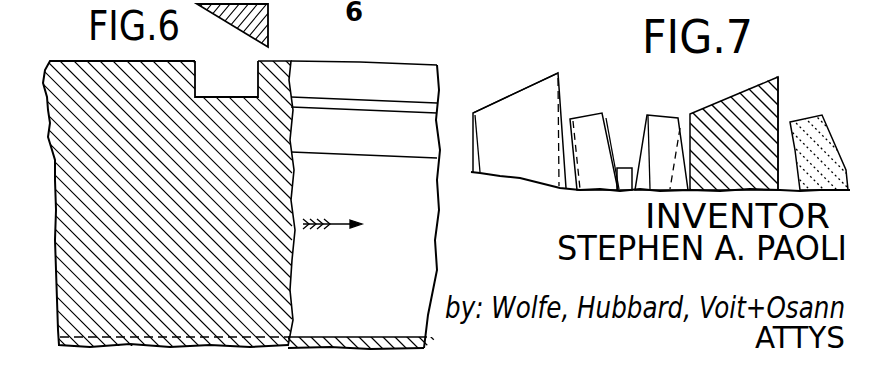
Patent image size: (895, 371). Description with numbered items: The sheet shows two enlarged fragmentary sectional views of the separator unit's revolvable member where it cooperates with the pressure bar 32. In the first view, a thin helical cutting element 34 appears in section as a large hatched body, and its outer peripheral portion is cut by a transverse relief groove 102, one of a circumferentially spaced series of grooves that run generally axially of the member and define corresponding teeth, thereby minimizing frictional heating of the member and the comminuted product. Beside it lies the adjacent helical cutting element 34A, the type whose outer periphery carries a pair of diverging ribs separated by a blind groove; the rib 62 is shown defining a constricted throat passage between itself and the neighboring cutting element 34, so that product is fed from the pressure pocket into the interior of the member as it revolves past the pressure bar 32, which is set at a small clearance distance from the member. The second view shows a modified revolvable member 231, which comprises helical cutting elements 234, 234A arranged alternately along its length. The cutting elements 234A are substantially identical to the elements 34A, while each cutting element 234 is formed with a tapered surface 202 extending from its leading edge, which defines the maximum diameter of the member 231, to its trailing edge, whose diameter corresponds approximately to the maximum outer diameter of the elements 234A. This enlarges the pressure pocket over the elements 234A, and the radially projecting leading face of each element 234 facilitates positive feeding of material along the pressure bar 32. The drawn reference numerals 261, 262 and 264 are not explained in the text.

In FIG. 6, the helical cutting element 34 is at (70, 203).
In FIG. 6, the relief groove 102 is at (226, 80).
In FIG. 6, the pressure bar 32 is at (262, 20).
In FIG. 6, the rib 62 is at (370, 103).
In FIG. 6, the helical cutting element 34A is at (428, 237).
In FIG. 7, the tapered surface 202 is at (488, 103).
In FIG. 7, the revolvable member 231 is at (525, 63).
In FIG. 7, the segment 261 is at (580, 115).
In FIG. 7, the pin 264 is at (627, 168).
In FIG. 7, the segment 262 is at (667, 113).
In FIG. 7, the helical cutting element 234 is at (770, 95).
In FIG. 7, the helical cutting element 234A is at (845, 170).